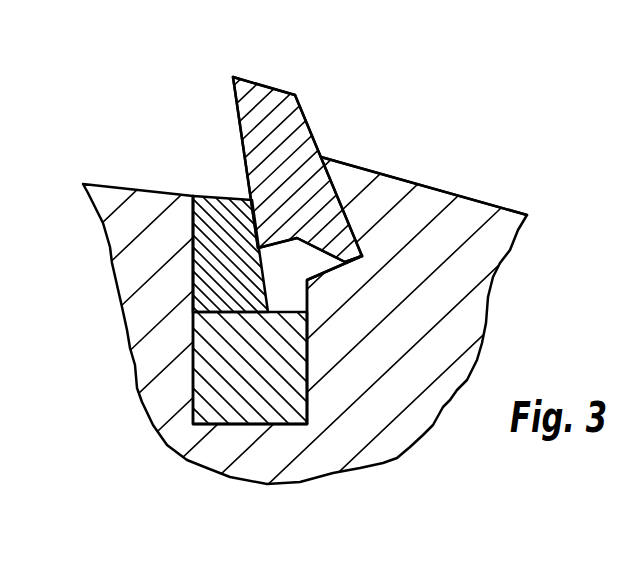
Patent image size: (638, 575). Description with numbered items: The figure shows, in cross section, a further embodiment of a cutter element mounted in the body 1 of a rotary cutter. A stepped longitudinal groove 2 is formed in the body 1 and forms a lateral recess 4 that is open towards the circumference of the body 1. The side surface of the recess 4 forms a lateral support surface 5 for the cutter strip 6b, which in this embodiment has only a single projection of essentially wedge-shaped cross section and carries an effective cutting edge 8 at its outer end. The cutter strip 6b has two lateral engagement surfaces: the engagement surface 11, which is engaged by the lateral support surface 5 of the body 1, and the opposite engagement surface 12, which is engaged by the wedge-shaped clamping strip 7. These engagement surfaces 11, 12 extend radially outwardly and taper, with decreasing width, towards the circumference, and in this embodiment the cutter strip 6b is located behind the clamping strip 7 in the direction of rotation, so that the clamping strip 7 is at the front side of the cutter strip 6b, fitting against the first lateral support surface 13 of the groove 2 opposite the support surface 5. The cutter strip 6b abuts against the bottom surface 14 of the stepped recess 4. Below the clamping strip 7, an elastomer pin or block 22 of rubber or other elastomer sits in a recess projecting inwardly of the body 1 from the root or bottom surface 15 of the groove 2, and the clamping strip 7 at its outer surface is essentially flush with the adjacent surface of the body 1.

The body 1 is at (505, 232).
The longitudinal groove 2 is at (288, 299).
The lateral recess 4 is at (370, 257).
The lateral support surface 5 is at (390, 172).
The cutter strip 6b is at (298, 76).
The clamping strip 7 is at (222, 199).
The cutting edge 8 is at (232, 77).
The engagement surface 11 is at (318, 145).
The engagement surface 12 is at (243, 143).
The support surface 13 is at (193, 267).
The bottom surface 14 is at (322, 272).
The bottom surface 15 is at (243, 427).
The elastomer pin or block 22 is at (220, 372).